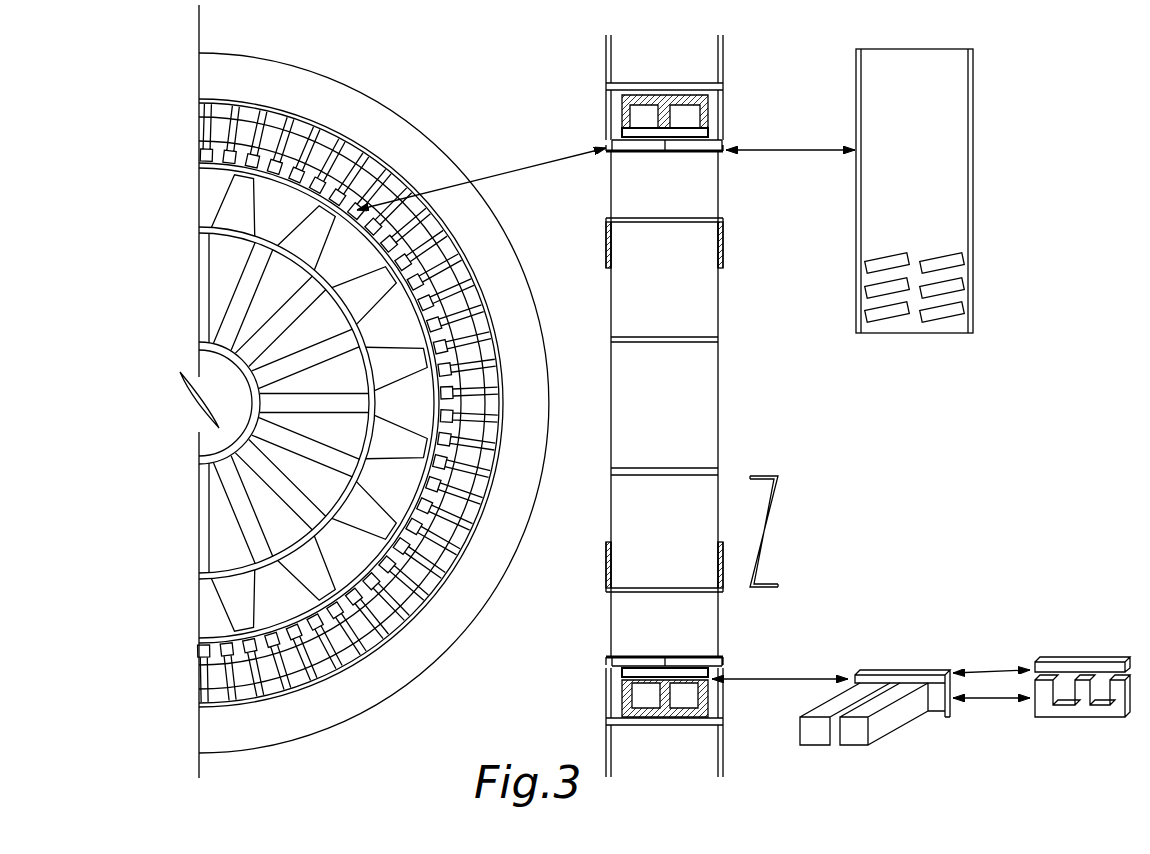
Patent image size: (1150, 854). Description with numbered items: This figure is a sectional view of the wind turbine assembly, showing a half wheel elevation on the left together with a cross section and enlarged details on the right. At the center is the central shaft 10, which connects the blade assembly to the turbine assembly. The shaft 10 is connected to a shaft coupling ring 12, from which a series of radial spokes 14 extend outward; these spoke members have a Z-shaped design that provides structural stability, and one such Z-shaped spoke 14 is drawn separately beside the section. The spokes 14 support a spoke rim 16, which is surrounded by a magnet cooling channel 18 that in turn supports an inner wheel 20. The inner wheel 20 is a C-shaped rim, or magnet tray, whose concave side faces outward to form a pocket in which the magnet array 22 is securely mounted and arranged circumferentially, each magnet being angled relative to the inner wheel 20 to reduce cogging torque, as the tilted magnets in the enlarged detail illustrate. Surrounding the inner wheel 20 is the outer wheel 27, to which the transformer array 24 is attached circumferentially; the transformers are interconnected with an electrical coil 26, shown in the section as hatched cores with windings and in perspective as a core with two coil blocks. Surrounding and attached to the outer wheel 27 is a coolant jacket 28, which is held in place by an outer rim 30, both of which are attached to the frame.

The central shaft 10 is at (195, 360).
The shaft coupling ring 12 is at (205, 343).
The radial spokes 14 is at (258, 268).
The spoke rim 16 is at (199, 231).
The magnet cooling channel 18 is at (215, 188).
The inner wheel 20 is at (199, 163).
The magnet array 22 is at (216, 638).
The transformer array 24 is at (268, 122).
The electrical coil 26 is at (210, 682).
The outer wheel 27 is at (240, 703).
The coolant jacket 28 is at (386, 106).
The outer rim 30 is at (263, 58).